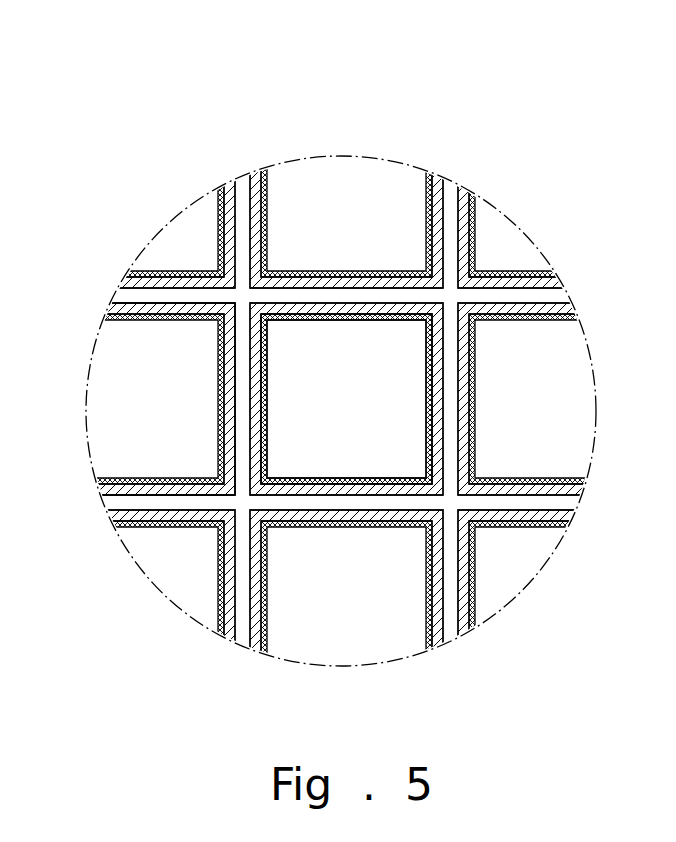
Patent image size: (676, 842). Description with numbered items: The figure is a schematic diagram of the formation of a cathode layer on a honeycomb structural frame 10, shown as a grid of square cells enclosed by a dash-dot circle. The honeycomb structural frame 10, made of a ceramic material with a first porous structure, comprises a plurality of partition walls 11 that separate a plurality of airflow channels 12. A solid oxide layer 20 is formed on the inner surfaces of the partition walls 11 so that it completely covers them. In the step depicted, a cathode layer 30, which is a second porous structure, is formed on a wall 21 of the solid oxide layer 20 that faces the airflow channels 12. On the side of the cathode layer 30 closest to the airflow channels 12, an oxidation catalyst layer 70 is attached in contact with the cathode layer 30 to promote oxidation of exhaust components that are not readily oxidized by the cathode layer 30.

The honeycomb structural frame 10 is at (345, 376).
The partition walls 11 is at (243, 252).
The airflow channels 12 is at (316, 358).
The solid oxide layer 20 is at (436, 292).
The wall of the solid oxide layer 21 is at (456, 425).
The cathode layer 30 is at (447, 315).
The oxidation catalyst layer 70 is at (187, 302).